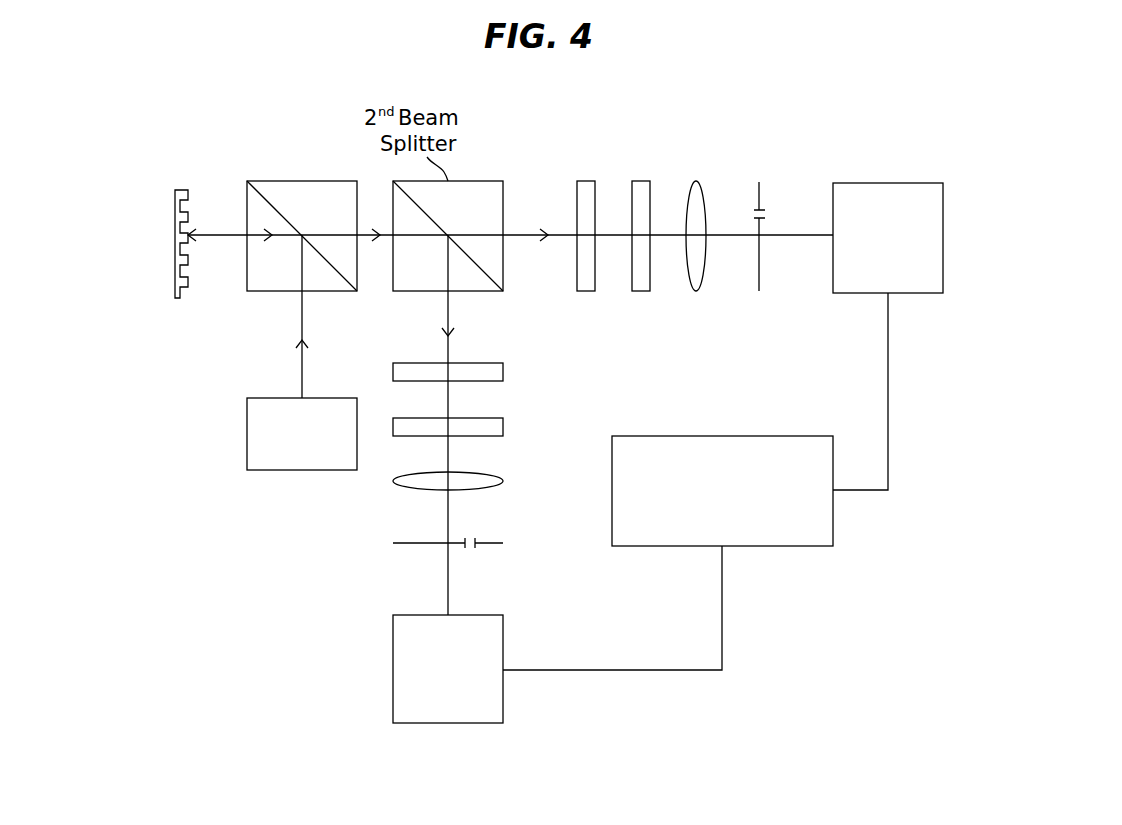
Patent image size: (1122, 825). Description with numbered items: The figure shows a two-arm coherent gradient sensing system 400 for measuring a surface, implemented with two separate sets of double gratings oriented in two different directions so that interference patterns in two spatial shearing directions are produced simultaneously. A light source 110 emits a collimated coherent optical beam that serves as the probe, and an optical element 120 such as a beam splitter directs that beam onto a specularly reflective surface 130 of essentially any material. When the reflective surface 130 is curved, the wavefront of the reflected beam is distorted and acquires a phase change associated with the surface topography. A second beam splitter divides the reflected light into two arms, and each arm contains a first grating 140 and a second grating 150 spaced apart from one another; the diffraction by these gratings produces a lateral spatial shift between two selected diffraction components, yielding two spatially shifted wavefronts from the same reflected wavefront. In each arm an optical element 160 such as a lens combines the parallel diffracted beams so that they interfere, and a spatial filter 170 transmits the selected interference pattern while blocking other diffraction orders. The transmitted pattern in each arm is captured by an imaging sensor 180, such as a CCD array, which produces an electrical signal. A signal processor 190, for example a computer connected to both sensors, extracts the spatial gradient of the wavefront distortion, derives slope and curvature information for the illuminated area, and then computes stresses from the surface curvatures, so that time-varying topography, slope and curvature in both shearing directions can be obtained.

The two-arm CGS system 400 is at (708, 92).
The light source 110 is at (247, 437).
The optical element 120 is at (302, 181).
The reflective surface 130 is at (175, 290).
The first grating 140 is at (588, 181).
The second grating 150 is at (641, 181).
The optical element 160 is at (697, 291).
The spatial filter 170 is at (761, 192).
The imaging sensor 180 is at (888, 183).
The signal processor 190 is at (775, 548).